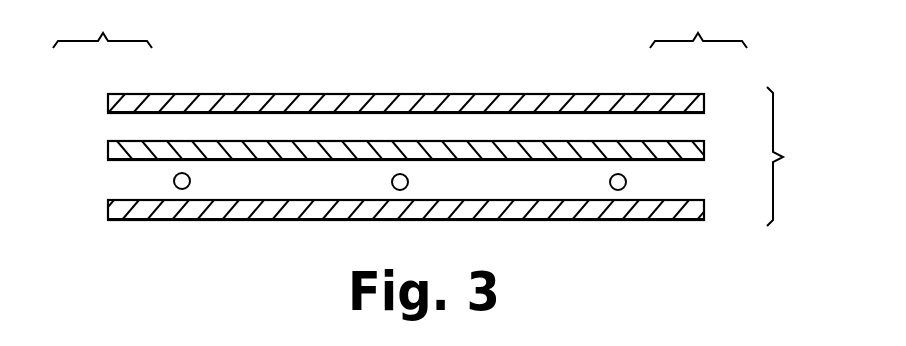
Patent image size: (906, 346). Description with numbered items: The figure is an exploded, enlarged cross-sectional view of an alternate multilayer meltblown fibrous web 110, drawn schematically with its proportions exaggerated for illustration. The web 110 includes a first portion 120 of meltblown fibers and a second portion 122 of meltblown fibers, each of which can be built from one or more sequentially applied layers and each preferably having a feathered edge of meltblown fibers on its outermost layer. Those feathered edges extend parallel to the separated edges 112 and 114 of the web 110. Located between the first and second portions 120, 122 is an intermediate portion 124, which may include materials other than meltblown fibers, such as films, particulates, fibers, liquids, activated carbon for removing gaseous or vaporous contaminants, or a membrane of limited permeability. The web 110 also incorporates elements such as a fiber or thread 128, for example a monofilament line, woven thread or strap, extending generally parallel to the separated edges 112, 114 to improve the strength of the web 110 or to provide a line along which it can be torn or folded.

The multilayer meltblown fibrous web 110 is at (802, 156).
The separated edge 112 is at (102, 24).
The separated edge 114 is at (698, 24).
The first portion 120 is at (118, 101).
The second portion 122 is at (118, 207).
The intermediate portion 124 is at (118, 147).
The fiber or thread 128 is at (400, 182).